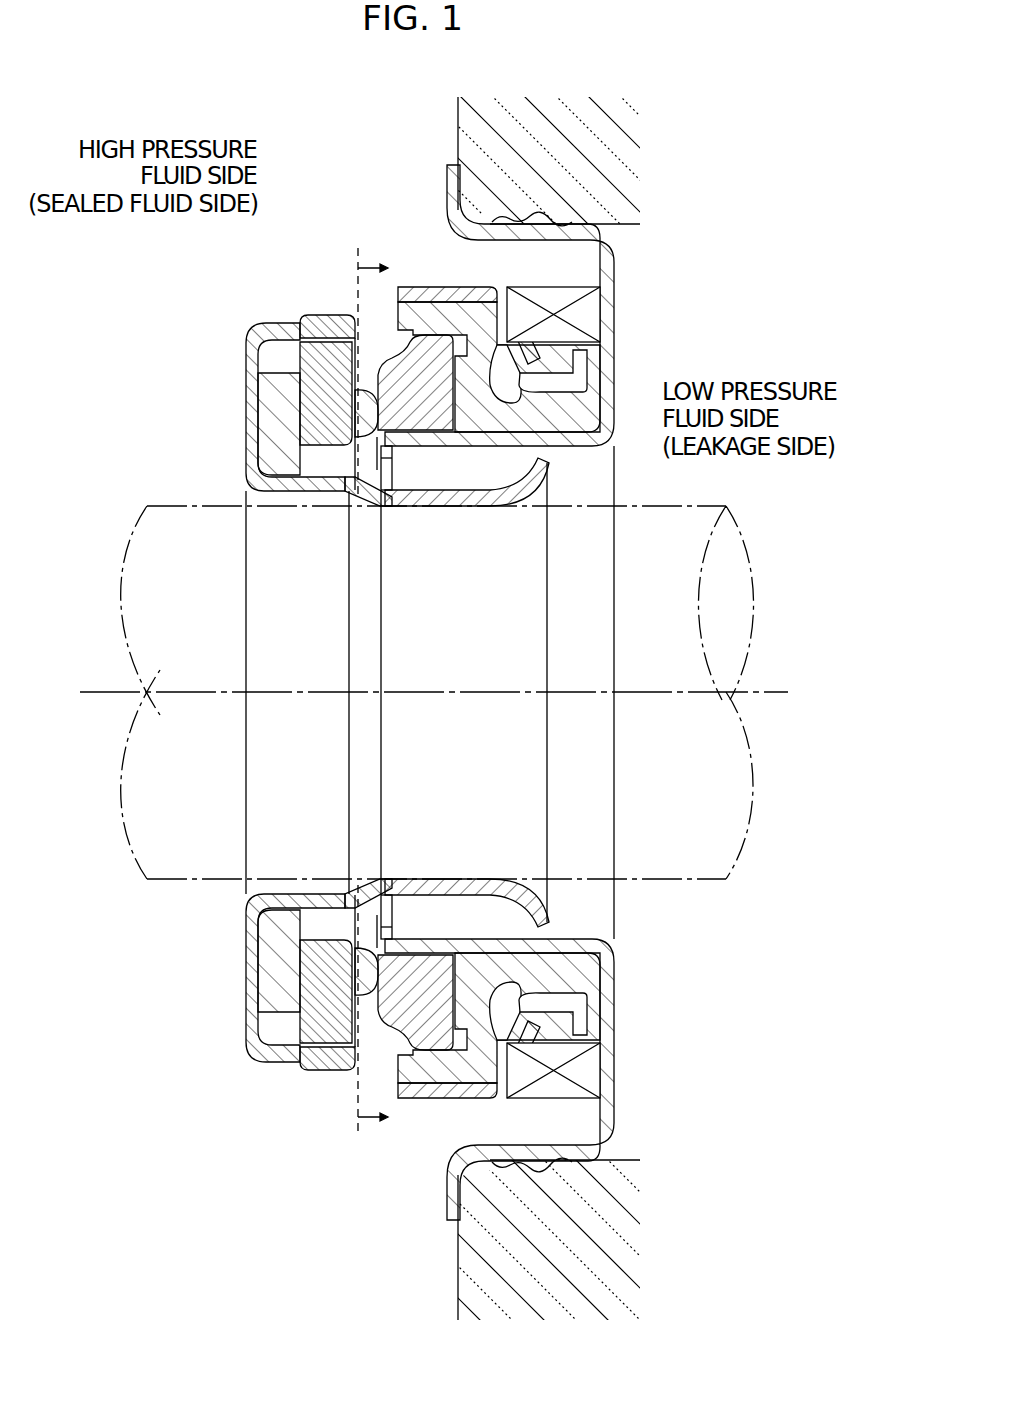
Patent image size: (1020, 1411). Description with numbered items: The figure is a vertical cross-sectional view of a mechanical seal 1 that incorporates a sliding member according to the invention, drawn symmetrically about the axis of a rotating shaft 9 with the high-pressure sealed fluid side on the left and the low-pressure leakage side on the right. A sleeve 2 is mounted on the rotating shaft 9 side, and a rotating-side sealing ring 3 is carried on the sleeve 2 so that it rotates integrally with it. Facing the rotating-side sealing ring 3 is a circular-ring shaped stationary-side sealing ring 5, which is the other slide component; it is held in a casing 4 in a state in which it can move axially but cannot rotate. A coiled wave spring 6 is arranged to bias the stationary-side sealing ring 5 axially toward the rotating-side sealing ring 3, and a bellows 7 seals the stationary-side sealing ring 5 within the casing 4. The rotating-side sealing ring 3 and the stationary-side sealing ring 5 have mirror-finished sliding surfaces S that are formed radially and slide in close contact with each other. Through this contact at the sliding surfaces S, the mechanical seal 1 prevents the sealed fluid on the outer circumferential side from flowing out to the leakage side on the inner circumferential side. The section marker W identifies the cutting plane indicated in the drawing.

The mechanical seal 1 is at (122, 343).
The sleeve 2 is at (246, 410).
The rotating-side sealing ring 3 is at (290, 343).
The casing 4 is at (483, 137).
The stationary-side sealing ring 5 is at (425, 405).
The coiled wave spring 6 is at (603, 313).
The bellows 7 is at (431, 312).
The rotating shaft 9 is at (200, 882).
The sliding surfaces S is at (374, 420).
The section width W is at (371, 700).